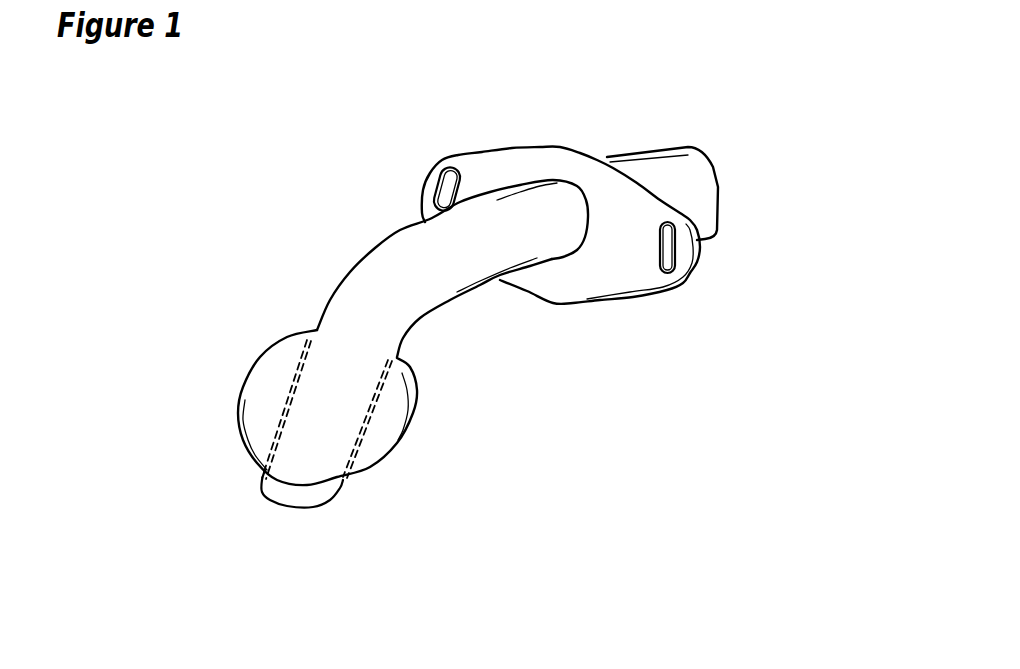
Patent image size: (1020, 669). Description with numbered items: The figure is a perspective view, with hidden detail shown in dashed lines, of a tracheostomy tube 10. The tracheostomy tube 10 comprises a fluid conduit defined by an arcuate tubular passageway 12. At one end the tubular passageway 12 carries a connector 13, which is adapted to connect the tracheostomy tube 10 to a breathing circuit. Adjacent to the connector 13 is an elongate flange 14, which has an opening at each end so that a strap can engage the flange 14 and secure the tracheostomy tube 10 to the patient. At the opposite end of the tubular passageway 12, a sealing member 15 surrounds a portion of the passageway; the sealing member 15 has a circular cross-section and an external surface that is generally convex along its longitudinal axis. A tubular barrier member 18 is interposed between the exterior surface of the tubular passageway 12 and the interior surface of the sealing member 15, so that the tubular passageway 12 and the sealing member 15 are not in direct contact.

The tracheostomy tube 10 is at (256, 219).
The tubular passageway 12 is at (427, 298).
The connector 13 is at (698, 180).
The elongate flange 14 is at (612, 280).
The sealing member 15 is at (377, 450).
The tubular barrier member 18 is at (290, 400).